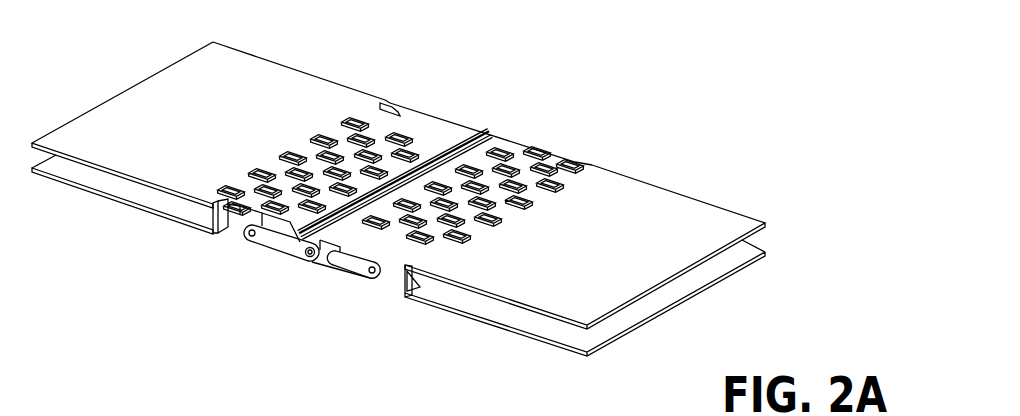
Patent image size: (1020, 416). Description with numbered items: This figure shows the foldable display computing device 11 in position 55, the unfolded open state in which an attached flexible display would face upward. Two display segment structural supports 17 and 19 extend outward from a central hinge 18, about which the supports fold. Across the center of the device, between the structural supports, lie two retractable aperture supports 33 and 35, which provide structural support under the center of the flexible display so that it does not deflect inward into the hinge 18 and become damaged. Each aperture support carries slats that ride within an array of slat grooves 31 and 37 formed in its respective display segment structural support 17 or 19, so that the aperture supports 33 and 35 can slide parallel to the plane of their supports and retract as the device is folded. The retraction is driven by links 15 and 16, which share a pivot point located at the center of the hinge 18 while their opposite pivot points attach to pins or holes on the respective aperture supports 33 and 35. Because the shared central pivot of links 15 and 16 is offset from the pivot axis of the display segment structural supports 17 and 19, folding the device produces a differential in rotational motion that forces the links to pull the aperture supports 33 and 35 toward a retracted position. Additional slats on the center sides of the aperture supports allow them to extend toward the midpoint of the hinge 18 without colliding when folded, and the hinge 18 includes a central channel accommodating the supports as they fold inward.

The foldable display computing device 11 is at (72, 127).
The display segment structural support 17 is at (89, 193).
The display segment structural support 19 is at (693, 207).
The link 15 is at (250, 248).
The link 16 is at (351, 274).
The hinge 18 is at (470, 414).
The slat grooves 31 is at (392, 104).
The aperture support 33 is at (438, 122).
The aperture support 35 is at (510, 143).
The slat grooves 37 is at (568, 160).
The position 55 is at (665, 82).